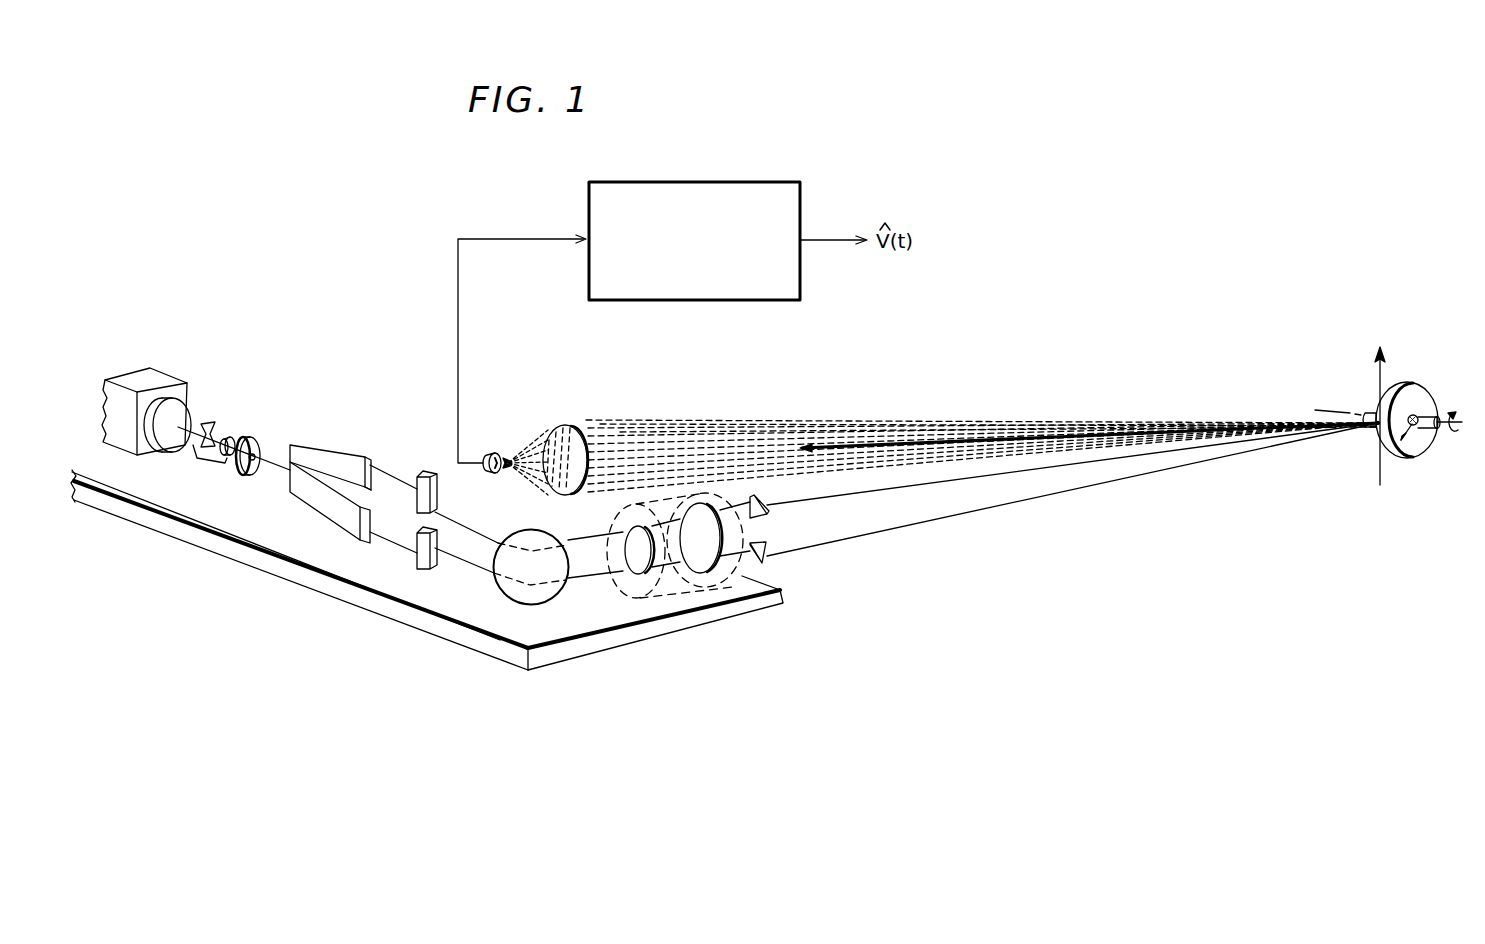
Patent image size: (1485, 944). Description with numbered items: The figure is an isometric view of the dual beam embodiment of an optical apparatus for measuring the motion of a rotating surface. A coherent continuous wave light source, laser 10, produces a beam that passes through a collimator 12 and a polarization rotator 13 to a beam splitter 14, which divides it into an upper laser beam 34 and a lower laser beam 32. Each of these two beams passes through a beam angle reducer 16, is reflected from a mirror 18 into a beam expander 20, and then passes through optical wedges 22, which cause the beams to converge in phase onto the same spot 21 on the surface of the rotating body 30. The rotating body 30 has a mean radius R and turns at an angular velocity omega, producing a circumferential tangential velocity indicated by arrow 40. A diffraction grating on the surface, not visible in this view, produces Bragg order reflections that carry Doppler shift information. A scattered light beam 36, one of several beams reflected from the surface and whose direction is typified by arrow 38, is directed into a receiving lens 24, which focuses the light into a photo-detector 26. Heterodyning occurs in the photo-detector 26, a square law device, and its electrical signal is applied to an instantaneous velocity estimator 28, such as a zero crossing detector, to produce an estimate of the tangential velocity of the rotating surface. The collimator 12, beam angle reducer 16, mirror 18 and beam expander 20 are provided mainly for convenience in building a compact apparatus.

The laser 10 is at (176, 376).
The collimator 12 is at (211, 464).
The polarization rotator 13 is at (260, 438).
The beam splitter 14 is at (338, 444).
The beam angle reducer 16 is at (422, 472).
The mirror 18 is at (505, 590).
The beam expander 20 is at (680, 593).
The spot 21 is at (1380, 427).
The optical wedges 22 is at (768, 503).
The receiving lens 24 is at (578, 426).
The photo-detector 26 is at (491, 452).
The instantaneous velocity estimator 28 is at (812, 196).
The rotating body 30 is at (1427, 388).
The lower laser beam 32 is at (1076, 488).
The upper laser beam 34 is at (1150, 454).
The scattered light beam 36 is at (957, 437).
The arrow 38 is at (853, 443).
The arrow 40 is at (1380, 380).